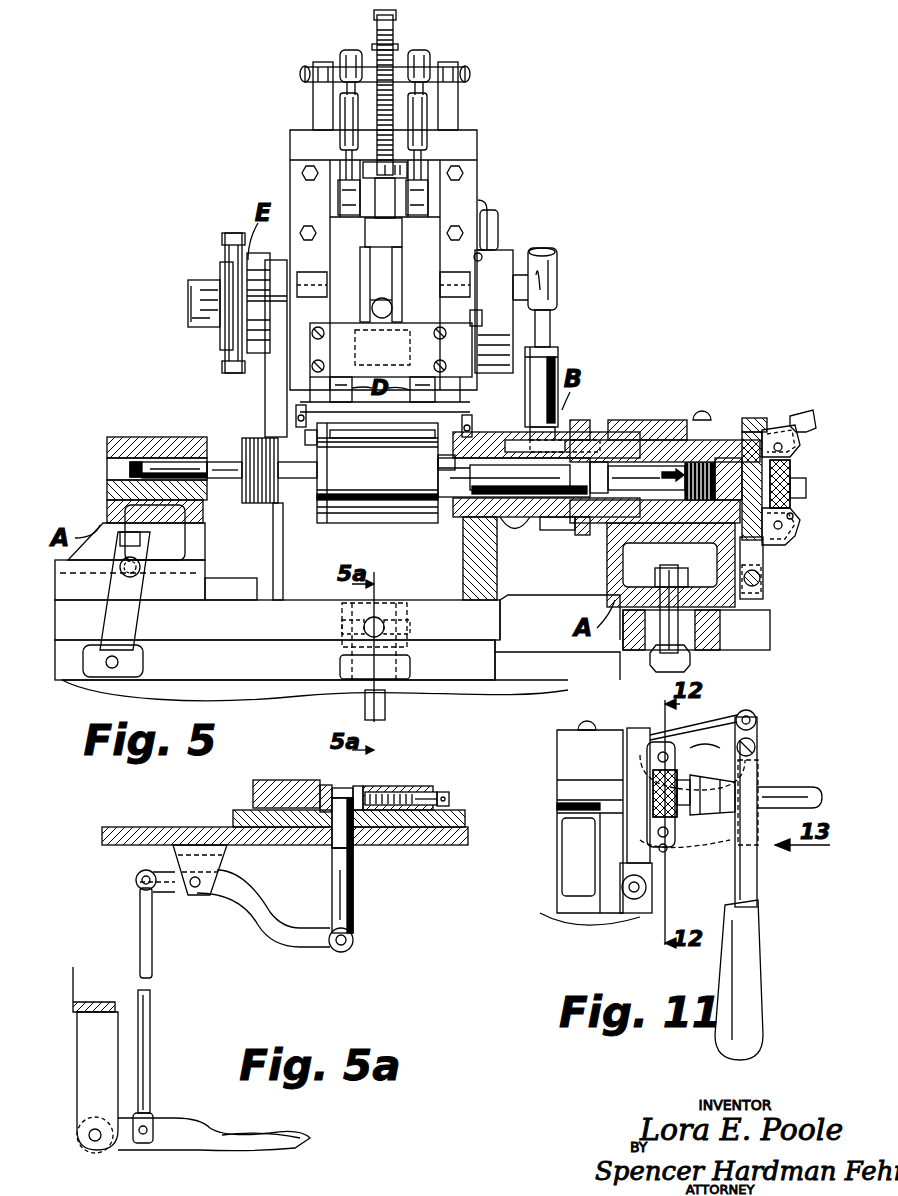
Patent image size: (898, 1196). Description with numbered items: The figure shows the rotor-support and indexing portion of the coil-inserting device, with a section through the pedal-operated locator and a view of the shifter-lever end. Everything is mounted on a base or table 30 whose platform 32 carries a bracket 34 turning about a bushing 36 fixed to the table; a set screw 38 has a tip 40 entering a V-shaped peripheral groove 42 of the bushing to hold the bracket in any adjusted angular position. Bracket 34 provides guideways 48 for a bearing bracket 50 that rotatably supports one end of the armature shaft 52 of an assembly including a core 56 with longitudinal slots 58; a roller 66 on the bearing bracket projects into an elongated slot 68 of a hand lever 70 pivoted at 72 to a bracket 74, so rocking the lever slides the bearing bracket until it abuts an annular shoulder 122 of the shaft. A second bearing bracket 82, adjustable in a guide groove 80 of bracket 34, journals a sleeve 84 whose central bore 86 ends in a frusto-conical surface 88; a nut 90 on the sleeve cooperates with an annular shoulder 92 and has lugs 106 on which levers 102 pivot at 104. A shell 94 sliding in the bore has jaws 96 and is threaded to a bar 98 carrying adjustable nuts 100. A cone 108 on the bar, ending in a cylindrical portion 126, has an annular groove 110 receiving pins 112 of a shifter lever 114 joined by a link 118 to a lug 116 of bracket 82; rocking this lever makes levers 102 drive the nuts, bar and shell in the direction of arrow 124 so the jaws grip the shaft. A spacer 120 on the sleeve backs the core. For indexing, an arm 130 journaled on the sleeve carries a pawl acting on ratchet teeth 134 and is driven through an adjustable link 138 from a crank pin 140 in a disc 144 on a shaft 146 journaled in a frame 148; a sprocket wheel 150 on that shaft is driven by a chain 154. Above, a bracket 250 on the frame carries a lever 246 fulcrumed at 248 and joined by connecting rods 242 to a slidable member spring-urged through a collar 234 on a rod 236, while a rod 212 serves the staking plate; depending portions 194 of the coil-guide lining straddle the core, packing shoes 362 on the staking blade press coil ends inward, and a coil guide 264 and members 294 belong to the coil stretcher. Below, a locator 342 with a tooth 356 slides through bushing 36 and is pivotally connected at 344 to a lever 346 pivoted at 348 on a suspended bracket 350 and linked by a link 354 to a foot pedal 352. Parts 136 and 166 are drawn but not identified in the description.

In FIG. 5, the rod 212 is at (395, 30).
In FIG. 5, the nut or collar 234 is at (376, 40).
In FIG. 5, the rod 236 is at (374, 48).
In FIG. 5, the lever 246 is at (397, 62).
In FIG. 5, the fulcrum 248 is at (468, 78).
In FIG. 5, the connecting rods 242 is at (430, 112).
In FIG. 5, the bracket 250 is at (470, 132).
In FIG. 5, the member 294 is at (318, 240).
In FIG. 5, the coil guide 264 is at (374, 268).
In FIG. 5, the rotatable shaft 146 is at (478, 316).
In FIG. 5, the depending portions 194 is at (296, 416).
In FIG. 5, the chain 154 is at (232, 232).
In FIG. 5, the sprocket wheel 150 is at (232, 275).
In FIG. 5, the disc 144 is at (506, 250).
In FIG. 5, the crank pin 140 is at (548, 280).
In FIG. 5, the link 138 is at (558, 362).
In FIG. 5, the bearing bracket 50 is at (110, 506).
In FIG. 5, the annular shoulder 122 is at (220, 462).
In FIG. 5, the armature shaft 52 is at (295, 482).
In FIG. 5, the core 56 is at (330, 515).
In FIG. 5, the longitudinal slots 58 is at (368, 495).
In FIG. 5, the packing shoes 362 is at (312, 440).
In FIG. 5, the spacer 120 is at (500, 436).
In FIG. 5, the jaws 96 is at (590, 472).
In FIG. 5, the arrow 124 is at (662, 480).
In FIG. 5, the bar 98 is at (690, 440).
In FIG. 11, the bar 98 is at (705, 815).
In FIG. 5, the ratchet teeth 134 is at (585, 425).
In FIG. 5, the bearing bracket 82 is at (625, 422).
In FIG. 11, the bearing bracket 82 is at (572, 744).
In FIG. 5, the shell 94 is at (636, 462).
In FIG. 5, the lug 116 is at (710, 412).
In FIG. 11, the lug 116 is at (580, 724).
In FIG. 5, the annular shoulder 92 is at (734, 437).
In FIG. 5, the block 166 is at (750, 418).
In FIG. 5, the link 118 is at (792, 410).
In FIG. 11, the link 118 is at (650, 728).
In FIG. 5, the levers 102 is at (795, 430).
In FIG. 11, the levers 102 is at (690, 760).
In FIG. 5, the pivot 104 is at (782, 447).
In FIG. 11, the pivot 104 is at (666, 752).
In FIG. 5, the adjustable nuts 100 is at (792, 468).
In FIG. 11, the adjustable nuts 100 is at (653, 792).
In FIG. 5, the lugs 106 is at (795, 512).
In FIG. 11, the lugs 106 is at (665, 852).
In FIG. 5, the nut 90 is at (760, 558).
In FIG. 5, the sleeve 84 is at (680, 525).
In FIG. 5, the central bore 86 is at (638, 527).
In FIG. 5, the guide groove 80 is at (715, 628).
In FIG. 5, the bearing 136 is at (515, 530).
In FIG. 5, the frusto-conical surface 88 is at (558, 530).
In FIG. 5, the arm 130 is at (583, 535).
In FIG. 5, the frame 148 is at (282, 537).
In FIG. 5, the guideways 48 is at (220, 585).
In FIG. 5, the bracket 34 is at (200, 630).
In FIG. 5A, the bracket 34 is at (278, 790).
In FIG. 5, the hand lever 70 is at (140, 608).
In FIG. 5, the roller 66 is at (137, 560).
In FIG. 5, the elongated slot 68 is at (130, 545).
In FIG. 5, the bracket 74 is at (84, 660).
In FIG. 5, the pivot 72 is at (120, 662).
In FIG. 5, the bushing 36 is at (398, 612).
In FIG. 5A, the bushing 36 is at (358, 838).
In FIG. 5, the set screw 38 is at (388, 632).
In FIG. 5A, the set screw 38 is at (446, 793).
In FIG. 5, the V-shaped peripheral groove 42 is at (345, 627).
In FIG. 5A, the V-shaped peripheral groove 42 is at (326, 790).
In FIG. 5, the platform 32 is at (505, 675).
In FIG. 5A, the platform 32 is at (468, 820).
In FIG. 5, the base or table 30 is at (456, 700).
In FIG. 5A, the base or table 30 is at (468, 840).
In FIG. 5A, the tooth 356 is at (342, 790).
In FIG. 5A, the tip 40 is at (366, 790).
In FIG. 5A, the locator 342 is at (354, 892).
In FIG. 5A, the floating pivotal connection 344 is at (352, 924).
In FIG. 5A, the suspended bracket 350 is at (220, 862).
In FIG. 5A, the pivot 348 is at (196, 888).
In FIG. 5A, the lever 346 is at (256, 930).
In FIG. 5A, the link 354 is at (152, 1010).
In FIG. 5A, the foot pedal 352 is at (180, 1122).
In FIG. 11, the cone 108 is at (702, 750).
In FIG. 11, the shifter lever 114 is at (758, 895).
In FIG. 11, the pins 112 is at (758, 752).
In FIG. 11, the annular groove 110 is at (760, 778).
In FIG. 11, the cylindrical portion 126 is at (760, 797).